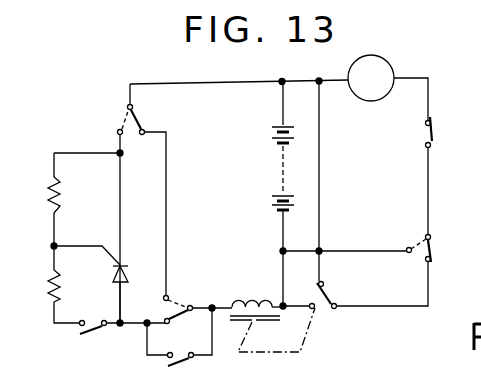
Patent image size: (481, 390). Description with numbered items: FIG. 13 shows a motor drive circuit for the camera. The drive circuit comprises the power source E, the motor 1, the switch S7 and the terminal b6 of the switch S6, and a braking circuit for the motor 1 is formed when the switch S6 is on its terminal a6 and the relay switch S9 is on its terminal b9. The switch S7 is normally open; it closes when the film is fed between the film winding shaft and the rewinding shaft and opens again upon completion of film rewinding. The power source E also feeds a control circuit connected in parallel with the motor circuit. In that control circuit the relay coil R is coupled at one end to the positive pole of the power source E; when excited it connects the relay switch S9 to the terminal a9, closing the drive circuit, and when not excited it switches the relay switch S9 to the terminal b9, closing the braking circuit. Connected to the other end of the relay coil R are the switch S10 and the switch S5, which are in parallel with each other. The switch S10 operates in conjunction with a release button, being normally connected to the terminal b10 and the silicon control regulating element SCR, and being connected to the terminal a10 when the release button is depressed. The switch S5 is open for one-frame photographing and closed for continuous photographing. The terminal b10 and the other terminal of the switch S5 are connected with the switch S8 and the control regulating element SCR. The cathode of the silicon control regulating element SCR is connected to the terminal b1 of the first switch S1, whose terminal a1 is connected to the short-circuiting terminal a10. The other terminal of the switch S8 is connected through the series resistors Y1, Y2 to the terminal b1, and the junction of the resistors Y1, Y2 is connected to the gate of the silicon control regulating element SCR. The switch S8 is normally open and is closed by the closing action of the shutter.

The motor 1 is at (381, 58).
The first switch S1 is at (140, 118).
The terminal of first switch b1 is at (117, 131).
The terminal of first switch a1 is at (146, 144).
The resistor Y1 is at (48, 188).
The resistor Y2 is at (48, 281).
The silicon control regulating element SCR is at (104, 294).
The switch S8 is at (100, 333).
The switch S10 is at (199, 297).
The terminal of switch S10 a10 is at (180, 293).
The terminal of switch S10 b10 is at (166, 332).
The switch S5 is at (185, 364).
The relay coil R is at (249, 300).
The terminal of relay switch S9 a9 is at (304, 317).
The terminal of relay switch S9 b9 is at (324, 284).
The relay switch S9 is at (339, 295).
The power source E is at (271, 145).
The switch S7 is at (434, 134).
The terminal of switch S6 b6 is at (409, 246).
The switch S6 is at (441, 250).
The terminal of switch S6 a6 is at (431, 262).